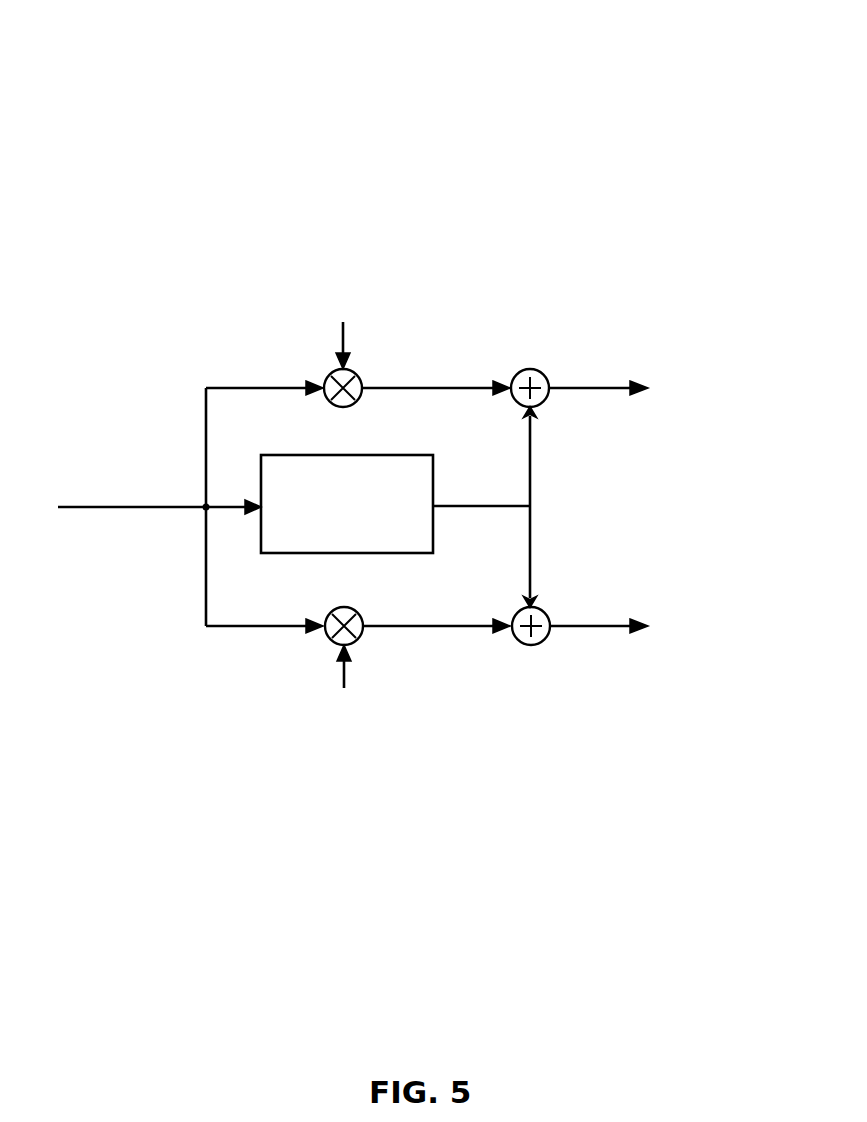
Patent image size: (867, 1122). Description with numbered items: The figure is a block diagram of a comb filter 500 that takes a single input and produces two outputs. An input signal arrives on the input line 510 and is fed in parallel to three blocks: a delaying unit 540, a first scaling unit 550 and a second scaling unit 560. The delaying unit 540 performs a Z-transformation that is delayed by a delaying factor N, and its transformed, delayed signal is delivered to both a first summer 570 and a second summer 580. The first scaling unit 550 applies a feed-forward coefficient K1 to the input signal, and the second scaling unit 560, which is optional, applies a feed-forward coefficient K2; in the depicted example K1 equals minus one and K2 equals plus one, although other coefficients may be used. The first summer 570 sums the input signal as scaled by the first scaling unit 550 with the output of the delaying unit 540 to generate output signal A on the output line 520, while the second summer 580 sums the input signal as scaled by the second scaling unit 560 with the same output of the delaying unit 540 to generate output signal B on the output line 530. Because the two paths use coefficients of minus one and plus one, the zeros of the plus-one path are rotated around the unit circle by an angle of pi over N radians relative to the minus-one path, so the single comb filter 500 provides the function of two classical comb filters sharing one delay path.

The comb filter 500 is at (706, 70).
The input line 510 is at (150, 505).
The output line 520 is at (608, 390).
The output line 530 is at (607, 624).
The delaying unit 540 is at (347, 504).
The first scaling unit 550 is at (330, 372).
The second scaling unit 560 is at (337, 607).
The first summer 570 is at (530, 368).
The second summer 580 is at (538, 640).